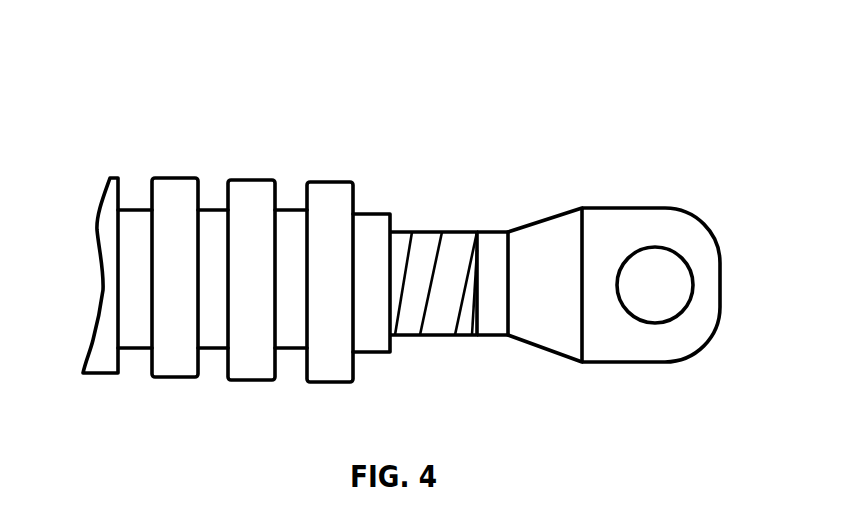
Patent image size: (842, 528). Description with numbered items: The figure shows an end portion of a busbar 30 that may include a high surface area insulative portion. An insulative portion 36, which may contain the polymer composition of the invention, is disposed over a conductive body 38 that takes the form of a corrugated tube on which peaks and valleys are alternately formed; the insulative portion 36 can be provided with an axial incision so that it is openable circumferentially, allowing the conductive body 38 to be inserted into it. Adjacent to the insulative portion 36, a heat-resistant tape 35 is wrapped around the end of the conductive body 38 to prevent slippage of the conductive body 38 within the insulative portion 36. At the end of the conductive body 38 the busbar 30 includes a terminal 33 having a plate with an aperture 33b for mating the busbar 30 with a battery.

The busbar 30 is at (88, 67).
The terminal 33 is at (557, 206).
The aperture 33b is at (676, 283).
The heat-resistant tape 35 is at (492, 253).
The insulative portion 36 is at (182, 172).
The conductive body 38 is at (422, 242).